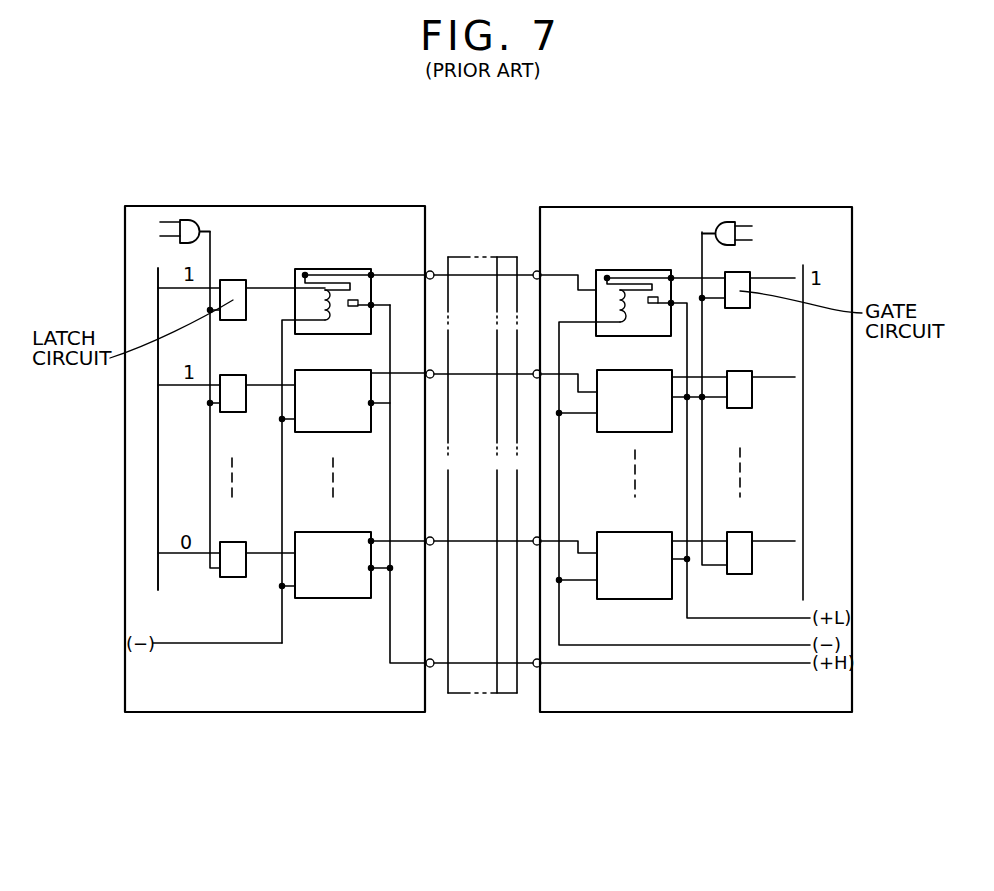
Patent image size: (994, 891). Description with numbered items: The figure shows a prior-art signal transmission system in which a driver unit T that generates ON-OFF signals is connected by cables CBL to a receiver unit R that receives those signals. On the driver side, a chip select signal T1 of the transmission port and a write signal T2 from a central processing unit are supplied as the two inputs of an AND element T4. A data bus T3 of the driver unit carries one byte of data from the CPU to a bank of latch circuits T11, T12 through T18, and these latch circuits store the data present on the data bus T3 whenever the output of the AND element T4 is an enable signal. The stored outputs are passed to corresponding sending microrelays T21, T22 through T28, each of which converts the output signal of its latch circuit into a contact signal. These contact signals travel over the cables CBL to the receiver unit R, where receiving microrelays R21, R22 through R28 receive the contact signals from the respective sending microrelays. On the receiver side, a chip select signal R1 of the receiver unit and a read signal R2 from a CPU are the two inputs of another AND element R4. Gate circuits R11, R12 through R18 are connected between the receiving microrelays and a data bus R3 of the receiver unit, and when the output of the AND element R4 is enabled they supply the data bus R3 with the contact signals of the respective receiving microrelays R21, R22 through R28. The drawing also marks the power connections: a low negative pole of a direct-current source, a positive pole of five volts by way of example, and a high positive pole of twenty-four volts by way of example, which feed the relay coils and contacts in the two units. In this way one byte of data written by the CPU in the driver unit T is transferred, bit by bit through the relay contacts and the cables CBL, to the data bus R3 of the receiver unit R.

The driver unit T is at (296, 206).
The receiver unit R is at (650, 207).
The chip select signal T1 is at (155, 222).
The write signal T2 is at (155, 236).
The data bus T3 is at (158, 300).
The AND element T4 is at (200, 221).
The latch circuit T11 is at (236, 280).
The latch circuit T12 is at (237, 375).
The latch circuit T18 is at (244, 542).
The sending microrelay T21 is at (343, 269).
The sending microrelay T22 is at (335, 370).
The sending microrelay T28 is at (352, 532).
The cables CBL is at (471, 697).
The chip select signal R1 is at (758, 225).
The read signal R2 is at (758, 240).
The data bus R3 is at (803, 266).
The AND element R4 is at (716, 226).
The gate circuit R11 is at (750, 305).
The gate circuit R12 is at (737, 371).
The gate circuit R18 is at (750, 532).
The receiving microrelay R21 is at (612, 270).
The receiving microrelay R22 is at (640, 370).
The receiving microrelay R28 is at (605, 532).